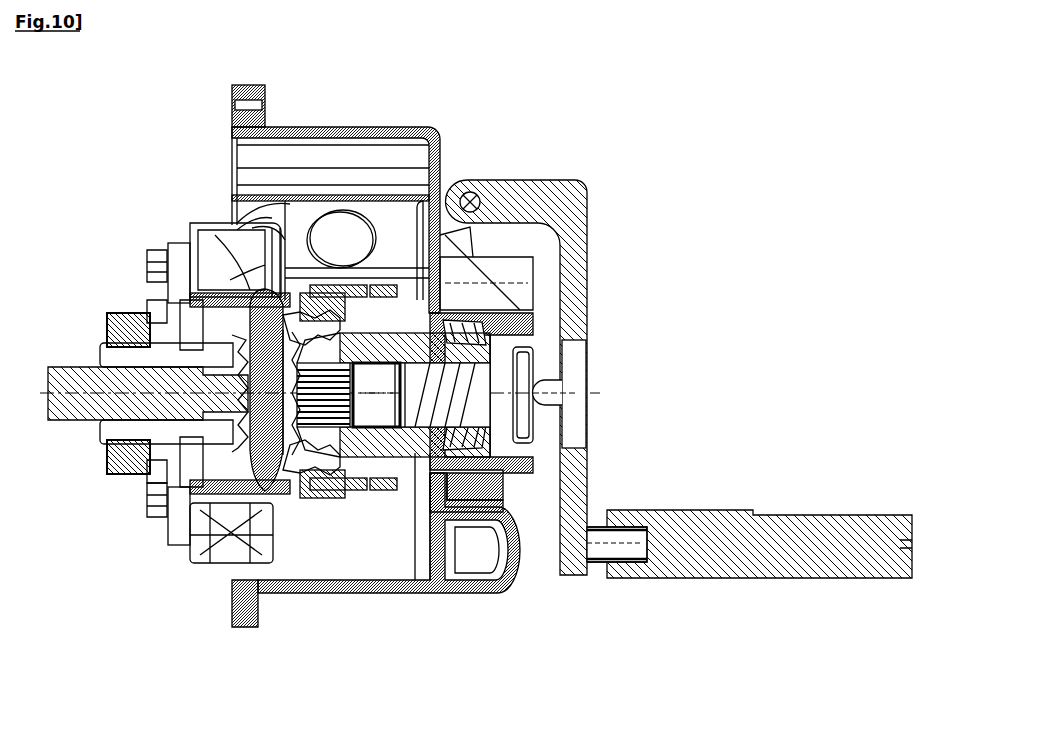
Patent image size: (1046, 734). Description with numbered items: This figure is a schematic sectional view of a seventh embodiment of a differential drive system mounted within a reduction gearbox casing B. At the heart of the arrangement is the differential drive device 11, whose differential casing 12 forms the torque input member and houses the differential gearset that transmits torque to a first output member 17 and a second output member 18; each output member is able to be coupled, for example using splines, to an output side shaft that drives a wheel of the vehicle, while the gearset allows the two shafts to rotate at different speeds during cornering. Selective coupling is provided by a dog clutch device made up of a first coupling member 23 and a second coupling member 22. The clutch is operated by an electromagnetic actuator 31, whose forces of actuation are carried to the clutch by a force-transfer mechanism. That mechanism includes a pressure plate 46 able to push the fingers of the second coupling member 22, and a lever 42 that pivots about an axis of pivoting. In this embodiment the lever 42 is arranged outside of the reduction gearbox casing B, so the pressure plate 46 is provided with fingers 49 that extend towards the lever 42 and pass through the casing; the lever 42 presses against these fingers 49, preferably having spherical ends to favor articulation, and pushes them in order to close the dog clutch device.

The reduction gearbox casing B is at (352, 132).
The differential drive device 11 is at (145, 242).
The differential casing 12 is at (323, 493).
The first output member 17 is at (333, 495).
The second output member 18 is at (177, 457).
The second coupling member 22 is at (362, 507).
The first coupling member 23 is at (193, 563).
The electromagnetic actuator 31 is at (748, 493).
The lever 42 is at (588, 265).
The pressure plate 46 is at (393, 505).
The fingers 49 is at (550, 378).